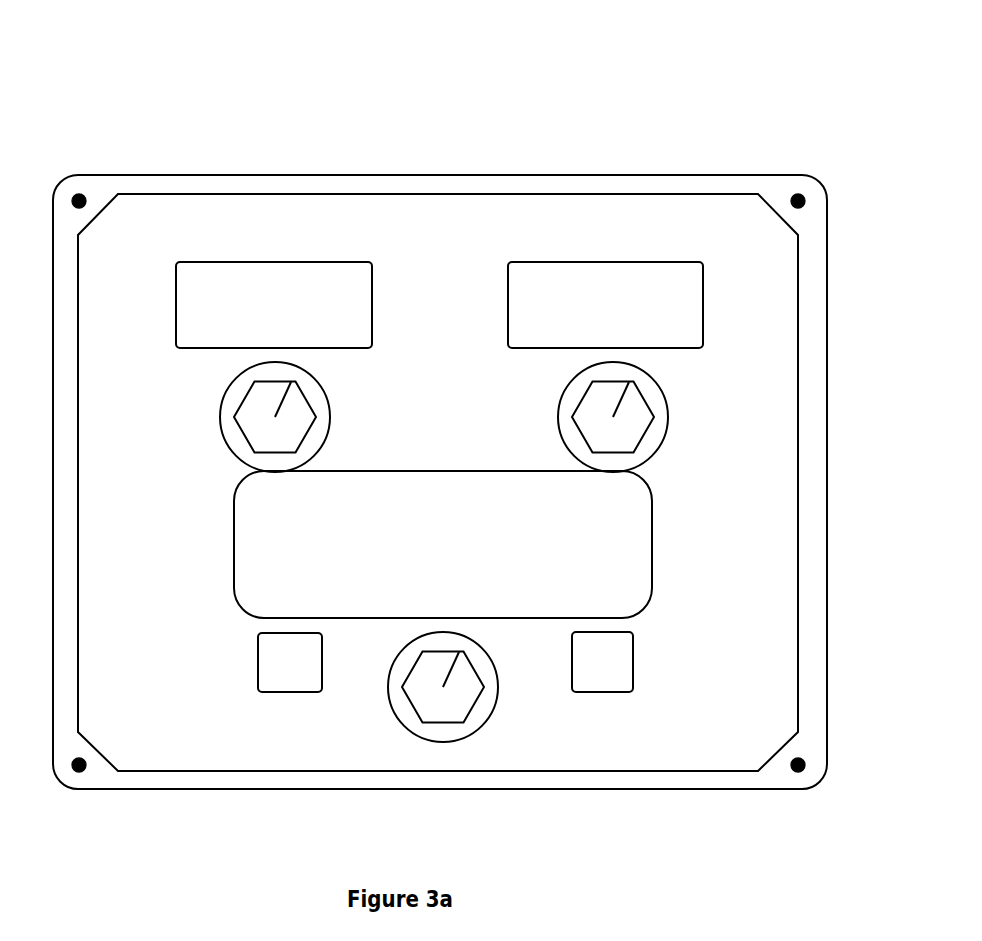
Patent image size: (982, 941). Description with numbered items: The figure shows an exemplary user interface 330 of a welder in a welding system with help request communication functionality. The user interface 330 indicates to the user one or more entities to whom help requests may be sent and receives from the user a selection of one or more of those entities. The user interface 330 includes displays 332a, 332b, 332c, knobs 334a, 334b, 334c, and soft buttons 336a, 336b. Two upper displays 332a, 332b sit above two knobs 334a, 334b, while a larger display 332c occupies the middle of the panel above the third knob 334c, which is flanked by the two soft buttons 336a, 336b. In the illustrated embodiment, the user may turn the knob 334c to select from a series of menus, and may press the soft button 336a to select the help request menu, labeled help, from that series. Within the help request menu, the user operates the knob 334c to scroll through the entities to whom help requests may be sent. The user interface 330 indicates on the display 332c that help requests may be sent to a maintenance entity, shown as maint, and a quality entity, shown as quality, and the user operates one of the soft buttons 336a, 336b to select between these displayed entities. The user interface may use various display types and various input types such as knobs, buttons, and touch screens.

The user interface 330 is at (463, 87).
The display 332a is at (176, 305).
The display 332b is at (508, 305).
The display 332c is at (234, 545).
The knob 334a is at (220, 417).
The knob 334b is at (558, 417).
The knob 334c is at (388, 687).
The soft button 336a is at (258, 663).
The soft button 336b is at (633, 660).